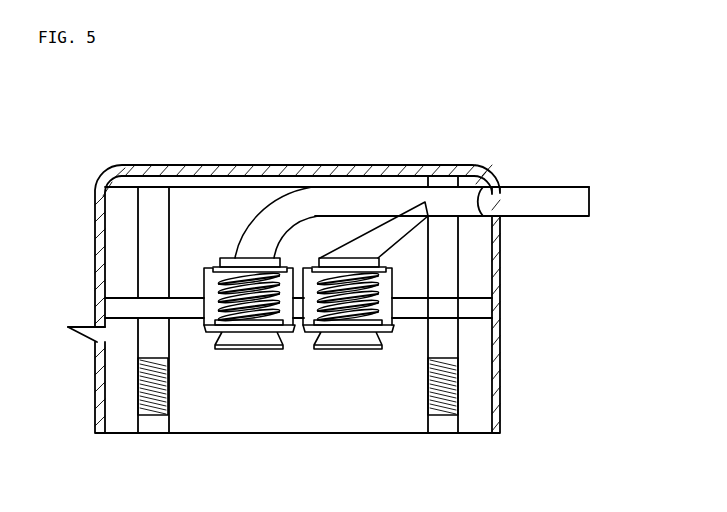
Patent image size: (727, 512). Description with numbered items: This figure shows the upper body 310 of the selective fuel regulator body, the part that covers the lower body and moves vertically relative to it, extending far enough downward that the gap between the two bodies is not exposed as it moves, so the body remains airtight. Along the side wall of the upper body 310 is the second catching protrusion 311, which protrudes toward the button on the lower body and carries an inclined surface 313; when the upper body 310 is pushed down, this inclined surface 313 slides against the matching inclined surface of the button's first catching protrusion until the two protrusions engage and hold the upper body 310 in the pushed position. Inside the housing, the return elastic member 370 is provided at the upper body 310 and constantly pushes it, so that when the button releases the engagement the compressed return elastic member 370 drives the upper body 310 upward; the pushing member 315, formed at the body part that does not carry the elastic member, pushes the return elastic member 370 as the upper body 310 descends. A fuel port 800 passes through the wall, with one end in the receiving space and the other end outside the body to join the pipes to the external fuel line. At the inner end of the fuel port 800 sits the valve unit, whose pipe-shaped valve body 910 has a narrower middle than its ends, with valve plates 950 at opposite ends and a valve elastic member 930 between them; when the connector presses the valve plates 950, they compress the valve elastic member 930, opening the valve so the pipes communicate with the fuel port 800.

The upper body 310 is at (363, 170).
The second catching protrusion 311 is at (81, 327).
The inclined surface 313 is at (83, 340).
The pushing member 315 is at (153, 221).
The return elastic member 370 is at (154, 414).
The fuel port 800 is at (558, 187).
The valve body 910 is at (385, 307).
The valve elastic member 930 is at (380, 276).
The valve plates 950 is at (385, 327).